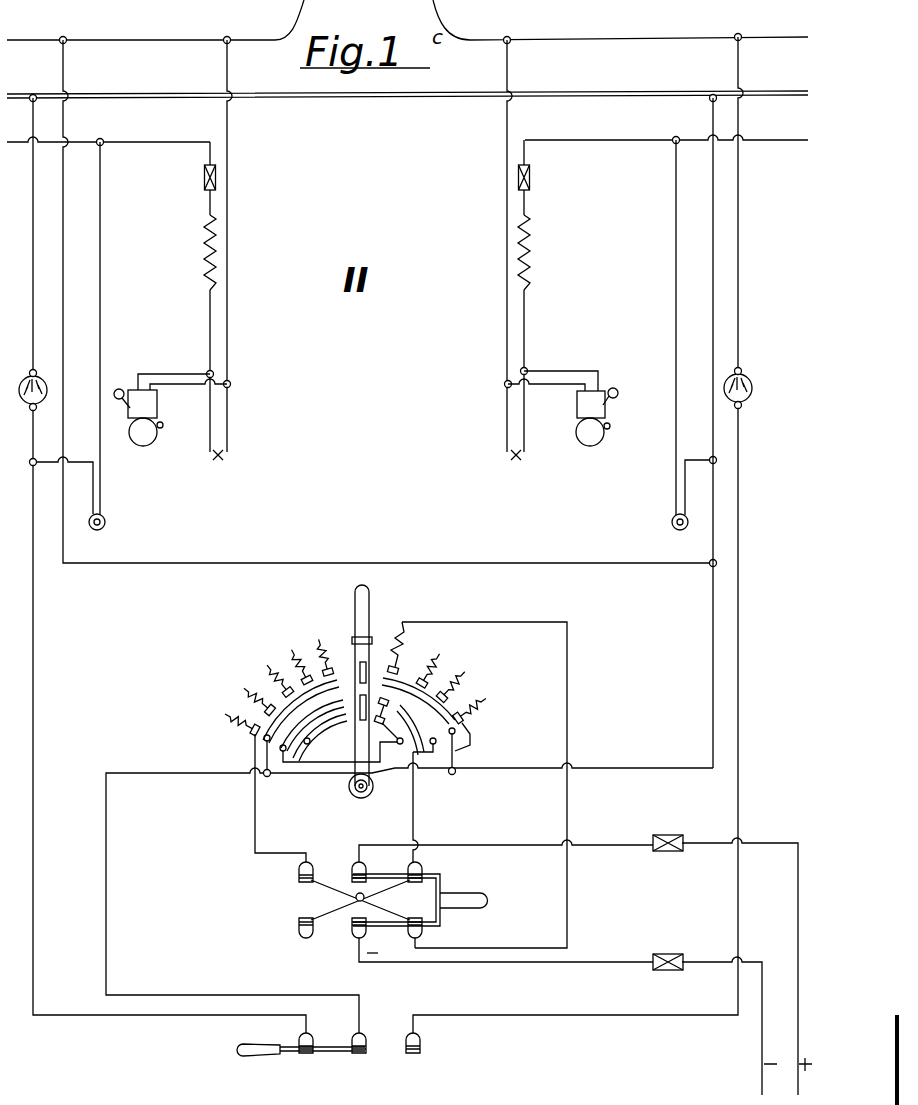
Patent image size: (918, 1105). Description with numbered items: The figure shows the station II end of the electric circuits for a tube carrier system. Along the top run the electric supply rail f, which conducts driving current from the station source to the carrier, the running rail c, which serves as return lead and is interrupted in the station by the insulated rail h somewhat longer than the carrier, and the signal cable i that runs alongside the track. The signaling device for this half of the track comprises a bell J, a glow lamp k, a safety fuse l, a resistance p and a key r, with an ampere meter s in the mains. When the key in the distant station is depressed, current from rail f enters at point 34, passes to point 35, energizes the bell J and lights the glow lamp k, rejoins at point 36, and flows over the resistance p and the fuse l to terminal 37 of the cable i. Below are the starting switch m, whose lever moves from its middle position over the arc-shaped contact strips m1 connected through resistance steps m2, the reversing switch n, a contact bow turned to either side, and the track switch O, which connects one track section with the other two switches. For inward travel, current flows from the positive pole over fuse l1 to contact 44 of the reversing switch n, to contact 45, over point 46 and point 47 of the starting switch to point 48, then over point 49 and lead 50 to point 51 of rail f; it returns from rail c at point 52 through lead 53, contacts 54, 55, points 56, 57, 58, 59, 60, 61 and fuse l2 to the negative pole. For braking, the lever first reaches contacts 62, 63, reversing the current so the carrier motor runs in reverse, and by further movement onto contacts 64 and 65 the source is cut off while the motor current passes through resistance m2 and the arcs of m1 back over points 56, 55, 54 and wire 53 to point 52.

The point of rail f 51 is at (62, 37).
The point 34 is at (229, 37).
The point on rail c 52 is at (41, 86).
The terminal of cable i 37 is at (110, 135).
The lead 50 is at (64, 280).
The lead 53 is at (35, 638).
The point 36 is at (208, 371).
The point 35 is at (232, 384).
The contact 63 is at (382, 698).
The contact 62 is at (396, 667).
The contact 64 is at (425, 679).
The contact 65 is at (466, 727).
The point 58 is at (252, 727).
The point 57 is at (264, 740).
The point 56 is at (264, 777).
The point 48 is at (283, 752).
The point of the starting switch 47 is at (309, 745).
The point 46 is at (403, 745).
The point 49 is at (456, 774).
The point 59 is at (300, 866).
The contact of the reversing switch 44 is at (356, 868).
The contact 45 is at (425, 869).
The point 61 is at (356, 936).
The contact 60 is at (426, 933).
The contact 54 is at (310, 1056).
The contact 55 is at (366, 1056).
The electric supply rail f is at (112, 43).
The running rail c is at (191, 95).
The insulated rail h is at (352, 98).
The cable i is at (86, 144).
The safety fuse l is at (204, 180).
The resistance p is at (204, 250).
The bell J is at (128, 408).
The ampere meter s is at (25, 398).
The glow lamp k is at (225, 458).
The key r is at (106, 522).
The starting switch m is at (356, 604).
The arc-shaped contact strips m1 is at (488, 709).
The resistance steps m2 is at (480, 672).
The reversing switch n is at (487, 906).
The track switch O is at (248, 1052).
The safety fuse l1 is at (653, 835).
The safety fuse l2 is at (666, 953).